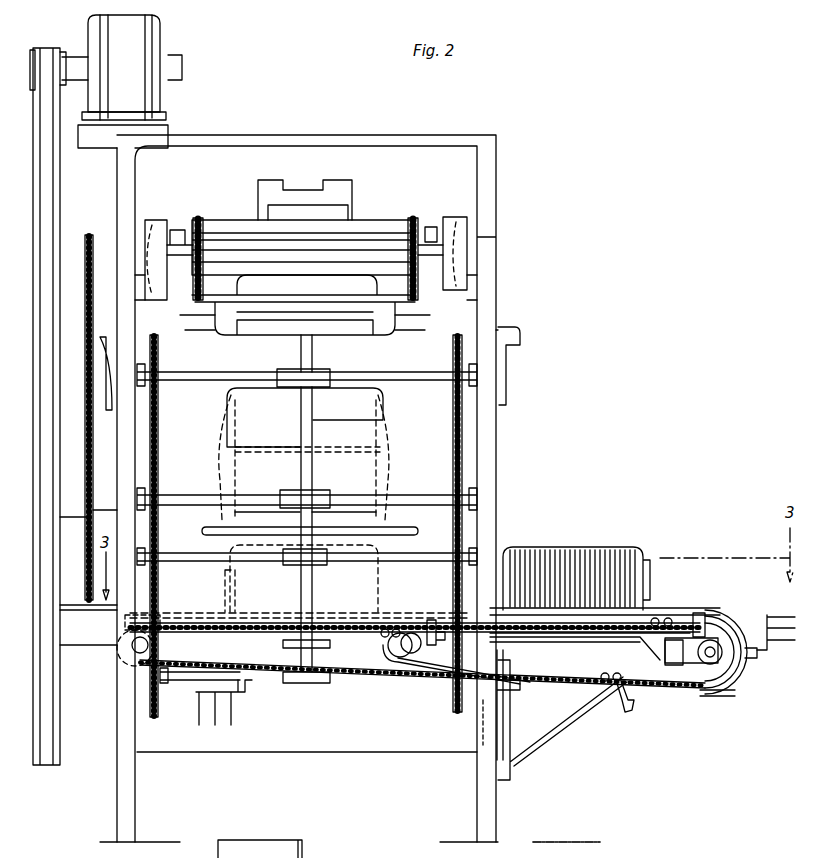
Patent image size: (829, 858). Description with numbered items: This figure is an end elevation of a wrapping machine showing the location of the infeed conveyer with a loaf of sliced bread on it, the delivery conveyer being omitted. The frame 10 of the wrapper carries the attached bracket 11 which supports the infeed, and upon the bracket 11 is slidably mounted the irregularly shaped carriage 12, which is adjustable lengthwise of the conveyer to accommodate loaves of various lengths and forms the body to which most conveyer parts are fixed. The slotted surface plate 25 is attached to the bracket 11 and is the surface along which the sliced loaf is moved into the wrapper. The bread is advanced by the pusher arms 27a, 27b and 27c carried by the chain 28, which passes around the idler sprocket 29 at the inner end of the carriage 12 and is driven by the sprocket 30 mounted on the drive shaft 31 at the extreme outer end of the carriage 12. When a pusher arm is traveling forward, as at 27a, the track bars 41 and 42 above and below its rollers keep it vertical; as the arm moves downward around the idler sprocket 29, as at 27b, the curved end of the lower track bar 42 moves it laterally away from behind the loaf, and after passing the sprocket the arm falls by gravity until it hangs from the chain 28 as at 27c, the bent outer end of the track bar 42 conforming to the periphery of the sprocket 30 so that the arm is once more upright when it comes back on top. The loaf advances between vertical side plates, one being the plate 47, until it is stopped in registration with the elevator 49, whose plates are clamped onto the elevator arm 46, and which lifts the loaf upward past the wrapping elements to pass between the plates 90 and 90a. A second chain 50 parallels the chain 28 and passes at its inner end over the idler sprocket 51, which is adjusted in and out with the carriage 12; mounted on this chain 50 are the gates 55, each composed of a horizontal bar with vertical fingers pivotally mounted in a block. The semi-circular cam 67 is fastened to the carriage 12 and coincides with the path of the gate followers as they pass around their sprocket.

The frame 10 is at (507, 433).
The bracket 11 is at (561, 742).
The carriage 12 is at (432, 656).
The slotted surface plate 25 is at (660, 607).
The pusher arm 27a is at (650, 586).
The pusher arm 27b is at (384, 606).
The pusher arm 27c is at (626, 702).
The chain 28 is at (527, 665).
The idler sprocket 29 is at (388, 643).
The drive sprocket 30 is at (726, 666).
The drive shaft 31 is at (710, 662).
The upper track bar 41 is at (692, 618).
The lower track bar 42 is at (602, 634).
The elevator arm 46 is at (316, 479).
The vertical side plate 47 is at (200, 634).
The elevator 49 is at (299, 654).
The second chain 50 is at (375, 678).
The idler sprocket 51 is at (140, 657).
The gate 55 is at (250, 705).
The semi-circular cam 67 is at (718, 697).
The plate 90 is at (230, 514).
The plate 90a is at (378, 514).